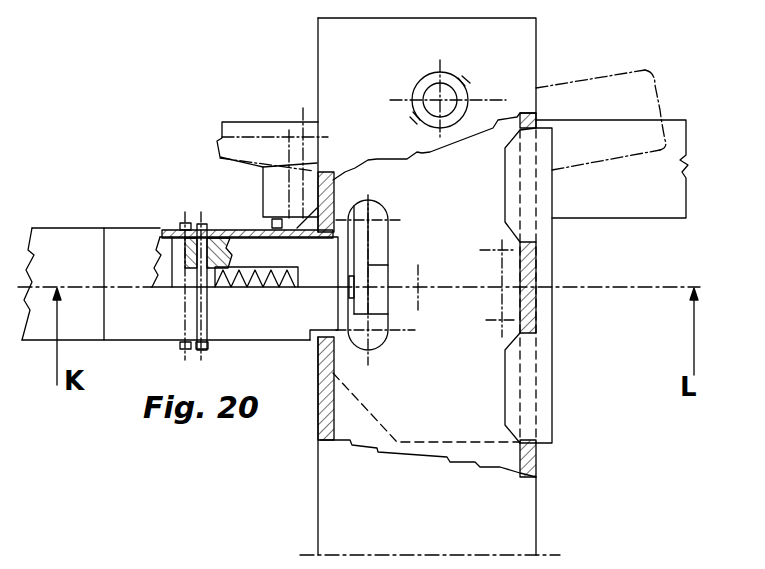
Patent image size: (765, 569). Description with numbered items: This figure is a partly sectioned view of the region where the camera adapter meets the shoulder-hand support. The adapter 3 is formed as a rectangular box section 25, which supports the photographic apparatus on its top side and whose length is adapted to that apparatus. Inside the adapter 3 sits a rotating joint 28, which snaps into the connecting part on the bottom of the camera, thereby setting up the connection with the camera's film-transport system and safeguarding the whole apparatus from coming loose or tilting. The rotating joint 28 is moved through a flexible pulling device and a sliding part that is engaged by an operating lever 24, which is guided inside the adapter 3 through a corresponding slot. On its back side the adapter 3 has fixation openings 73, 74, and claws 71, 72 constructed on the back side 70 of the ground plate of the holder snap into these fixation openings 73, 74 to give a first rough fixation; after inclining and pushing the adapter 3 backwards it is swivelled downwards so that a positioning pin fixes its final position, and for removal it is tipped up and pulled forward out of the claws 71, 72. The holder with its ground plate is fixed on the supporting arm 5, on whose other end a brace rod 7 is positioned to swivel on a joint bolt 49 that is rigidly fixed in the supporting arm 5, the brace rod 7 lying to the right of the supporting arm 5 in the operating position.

The adapter 3 is at (478, 40).
The rotating joint 28 is at (447, 97).
The joint bolt 49 is at (284, 132).
The supporting arm 5 is at (92, 242).
The operating lever 24 is at (368, 218).
The fixation opening 73 is at (507, 133).
The claw 71 is at (512, 190).
The brace rod 7 is at (665, 178).
The fixation opening 74 is at (520, 333).
The back side 70 is at (556, 361).
The claw 72 is at (510, 390).
The rectangular box section 25 is at (540, 453).